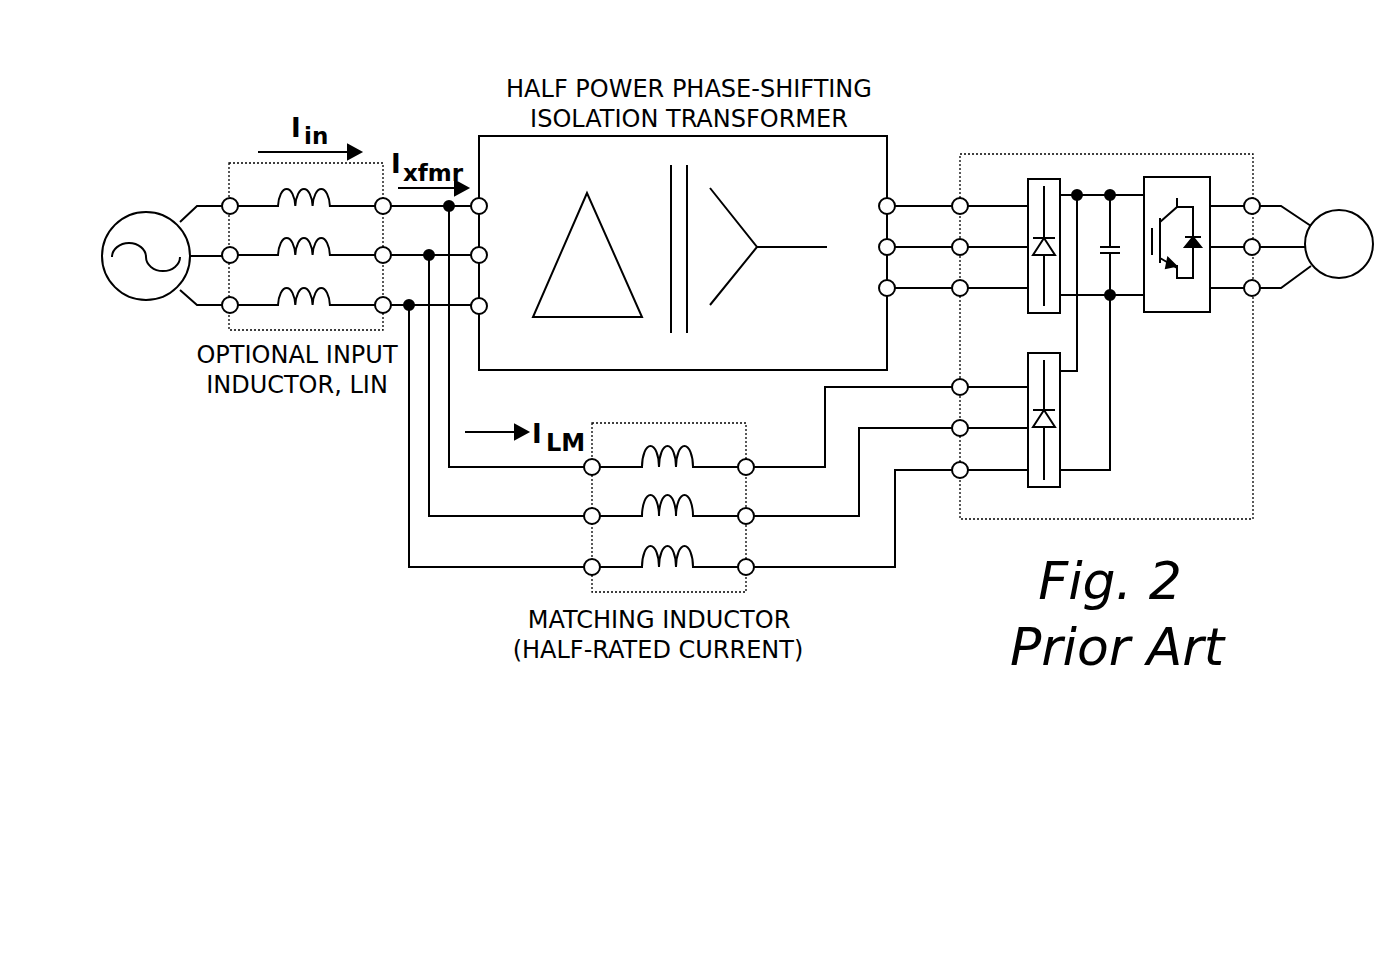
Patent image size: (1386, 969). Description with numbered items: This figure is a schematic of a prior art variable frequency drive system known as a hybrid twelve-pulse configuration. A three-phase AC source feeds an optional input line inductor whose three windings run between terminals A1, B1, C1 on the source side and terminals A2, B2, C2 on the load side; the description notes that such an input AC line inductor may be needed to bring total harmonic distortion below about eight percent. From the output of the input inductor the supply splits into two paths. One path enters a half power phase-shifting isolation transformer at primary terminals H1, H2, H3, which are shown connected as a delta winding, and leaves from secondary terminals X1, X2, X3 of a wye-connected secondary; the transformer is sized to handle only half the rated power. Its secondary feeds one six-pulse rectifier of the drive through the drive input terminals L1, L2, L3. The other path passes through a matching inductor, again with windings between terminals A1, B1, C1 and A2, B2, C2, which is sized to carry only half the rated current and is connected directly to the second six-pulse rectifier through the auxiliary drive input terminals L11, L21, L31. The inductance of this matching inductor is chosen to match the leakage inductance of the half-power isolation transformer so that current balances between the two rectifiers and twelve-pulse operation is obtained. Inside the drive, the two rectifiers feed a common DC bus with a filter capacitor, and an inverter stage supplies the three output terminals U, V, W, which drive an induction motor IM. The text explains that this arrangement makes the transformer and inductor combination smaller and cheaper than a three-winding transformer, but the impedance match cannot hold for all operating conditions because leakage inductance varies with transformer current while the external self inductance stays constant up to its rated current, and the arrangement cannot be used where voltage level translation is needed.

The inductor terminal A1 is at (428, 332).
The inductor terminal A2 is at (548, 332).
The inductor terminal B1 is at (428, 381).
The inductor terminal B2 is at (548, 381).
The inductor terminal C1 is at (428, 432).
The inductor terminal C2 is at (549, 432).
The transformer primary terminal H1 is at (536, 194).
The transformer primary terminal H2 is at (509, 294).
The transformer primary terminal H3 is at (565, 320).
The transformer secondary terminal X1 is at (794, 193).
The transformer secondary terminal X2 is at (851, 255).
The transformer secondary terminal X3 is at (794, 304).
The drive input terminal L1 is at (979, 199).
The drive input terminal L2 is at (979, 240).
The drive input terminal L3 is at (979, 281).
The drive auxiliary input terminal L11 is at (982, 380).
The drive auxiliary input terminal L21 is at (982, 421).
The drive auxiliary input terminal L31 is at (982, 463).
The drive output terminal U is at (1239, 199).
The drive output terminal V is at (1240, 240).
The drive output terminal W is at (1237, 281).
The induction motor IM is at (1339, 244).